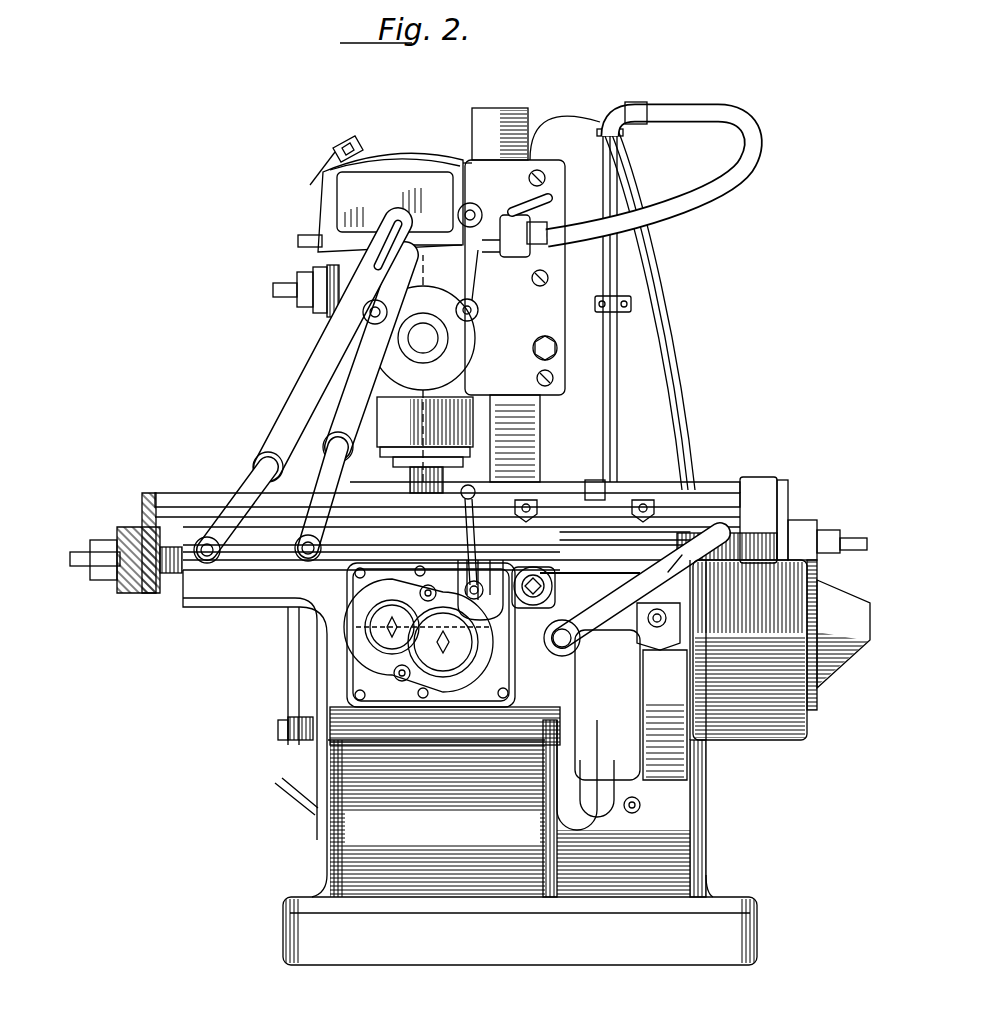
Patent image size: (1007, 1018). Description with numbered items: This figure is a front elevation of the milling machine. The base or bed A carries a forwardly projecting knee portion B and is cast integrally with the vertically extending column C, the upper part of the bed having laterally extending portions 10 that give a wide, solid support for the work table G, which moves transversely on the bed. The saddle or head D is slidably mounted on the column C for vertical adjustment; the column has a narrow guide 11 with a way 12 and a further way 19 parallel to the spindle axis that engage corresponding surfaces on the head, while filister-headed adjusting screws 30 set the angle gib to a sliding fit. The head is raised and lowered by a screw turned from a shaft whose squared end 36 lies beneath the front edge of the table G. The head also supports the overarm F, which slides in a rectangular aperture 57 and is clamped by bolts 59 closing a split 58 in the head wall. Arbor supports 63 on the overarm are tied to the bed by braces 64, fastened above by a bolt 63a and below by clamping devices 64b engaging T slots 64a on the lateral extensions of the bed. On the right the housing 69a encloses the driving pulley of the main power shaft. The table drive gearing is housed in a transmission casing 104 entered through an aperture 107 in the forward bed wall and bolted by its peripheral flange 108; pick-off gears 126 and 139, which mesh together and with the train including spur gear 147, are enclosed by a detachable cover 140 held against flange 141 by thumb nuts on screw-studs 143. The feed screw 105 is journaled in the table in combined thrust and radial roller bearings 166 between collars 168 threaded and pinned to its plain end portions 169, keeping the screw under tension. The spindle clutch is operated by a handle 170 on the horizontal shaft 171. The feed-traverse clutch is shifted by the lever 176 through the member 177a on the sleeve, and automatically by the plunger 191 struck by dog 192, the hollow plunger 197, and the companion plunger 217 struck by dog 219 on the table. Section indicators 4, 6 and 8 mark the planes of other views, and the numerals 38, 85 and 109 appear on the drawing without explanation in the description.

The base or bed A is at (345, 852).
The knee portion B is at (300, 740).
The column portion C is at (668, 392).
The saddle or head D is at (515, 277).
The overarm F is at (380, 188).
The work support or table G is at (570, 482).
The section line 4- 4 is at (390, 150).
The section line 6- 6 is at (460, 631).
The section line 8- 8 is at (398, 494).
The laterally extending portions 10 is at (218, 603).
The narrow guide 11 is at (510, 88).
The way 12 is at (540, 415).
The way 19 is at (472, 142).
The filister-headed adjusting screws 30 is at (529, 180).
The squared end 36 is at (531, 576).
The control nut 38 is at (538, 340).
The aperture 57 is at (325, 250).
The split 58 is at (325, 175).
The clamping bolts 59 is at (356, 139).
The supports 63 is at (445, 284).
The bolt 63a is at (330, 330).
The braces 64 is at (290, 415).
The T slots 64a is at (245, 490).
The clamping devices 64b is at (245, 590).
The housing 69a is at (805, 715).
The spindle nose 85 is at (440, 480).
The transmission casing 104 is at (392, 700).
The feed screw 105 is at (170, 574).
The aperture 107 is at (392, 676).
The peripheral flange 108 is at (833, 530).
The clamp 109 is at (538, 502).
The pick-off gear 126 is at (413, 627).
The second pick-off gear 139 is at (372, 635).
The detachable cover 140 is at (400, 660).
The peripheral flange 141 is at (443, 642).
The screw-studs 143 is at (412, 710).
The spur gear 147 is at (338, 706).
The combined thrust and radial roller bearings 166 is at (135, 594).
The collars 168 is at (122, 586).
The plain end portions 169 is at (92, 552).
The handle 170 is at (582, 704).
The shaft 171 is at (575, 700).
The lever 176 is at (440, 530).
The member 177a is at (548, 612).
The plunger 191 is at (475, 537).
The dog 192 is at (485, 492).
The hollow plunger 197 is at (460, 548).
The companion plunger 217 is at (480, 548).
The dog 219 is at (648, 500).